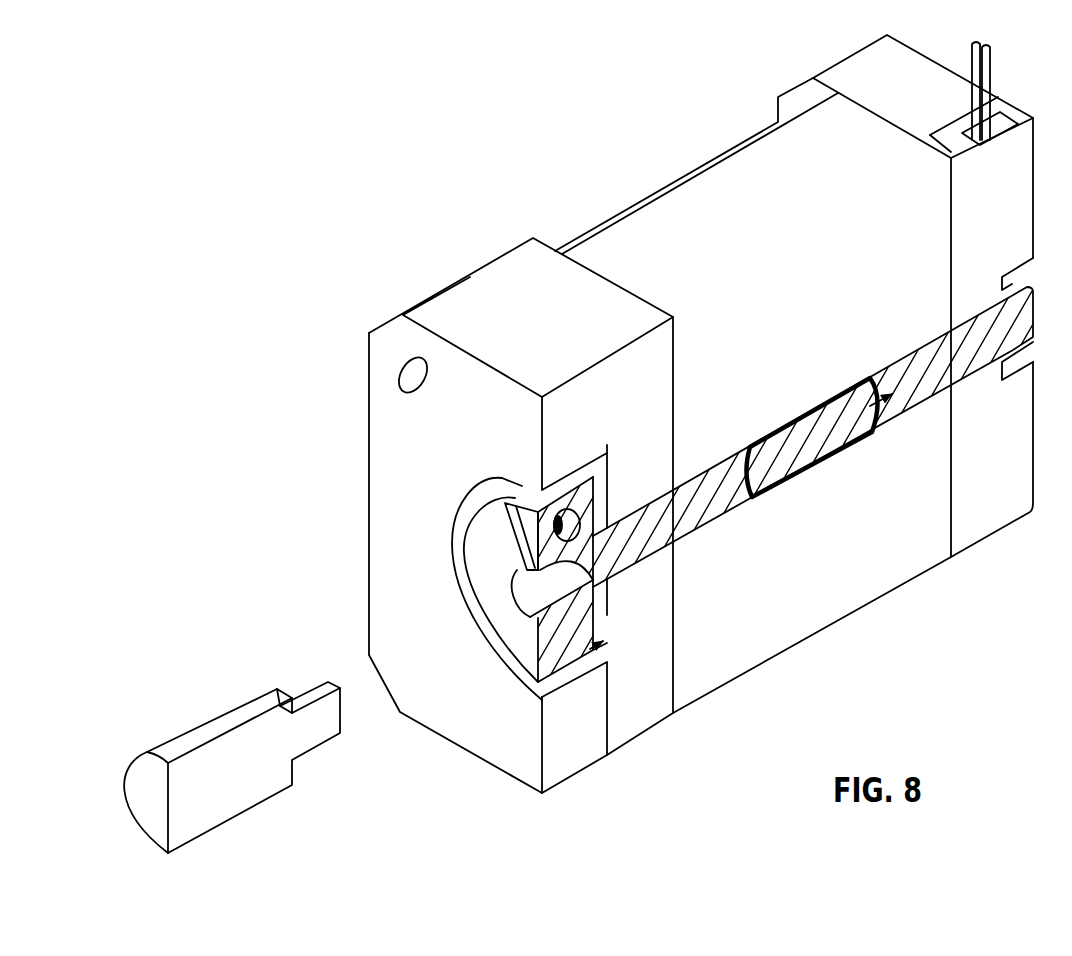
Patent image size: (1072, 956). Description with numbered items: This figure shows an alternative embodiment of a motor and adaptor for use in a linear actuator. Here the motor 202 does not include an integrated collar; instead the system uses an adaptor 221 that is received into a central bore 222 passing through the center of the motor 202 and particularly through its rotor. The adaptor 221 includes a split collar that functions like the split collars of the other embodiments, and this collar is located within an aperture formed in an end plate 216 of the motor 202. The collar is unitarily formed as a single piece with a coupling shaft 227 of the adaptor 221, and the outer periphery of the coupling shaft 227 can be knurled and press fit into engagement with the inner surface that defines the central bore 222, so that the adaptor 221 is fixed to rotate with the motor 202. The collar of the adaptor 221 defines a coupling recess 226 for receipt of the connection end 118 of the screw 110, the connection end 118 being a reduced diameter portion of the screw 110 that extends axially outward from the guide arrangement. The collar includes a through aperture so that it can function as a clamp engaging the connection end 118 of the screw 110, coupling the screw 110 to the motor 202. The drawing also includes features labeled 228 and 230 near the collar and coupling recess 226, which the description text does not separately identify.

The motor 202 is at (597, 176).
The end plate 216 is at (441, 316).
The central bore 222 is at (923, 373).
The adaptor 221 is at (738, 485).
The coupling shaft 227 is at (680, 522).
The coupling recess 226 is at (481, 568).
The blade 228 is at (501, 520).
The pin 230 is at (598, 503).
The screw 110 is at (227, 735).
The connection end 118 is at (313, 697).